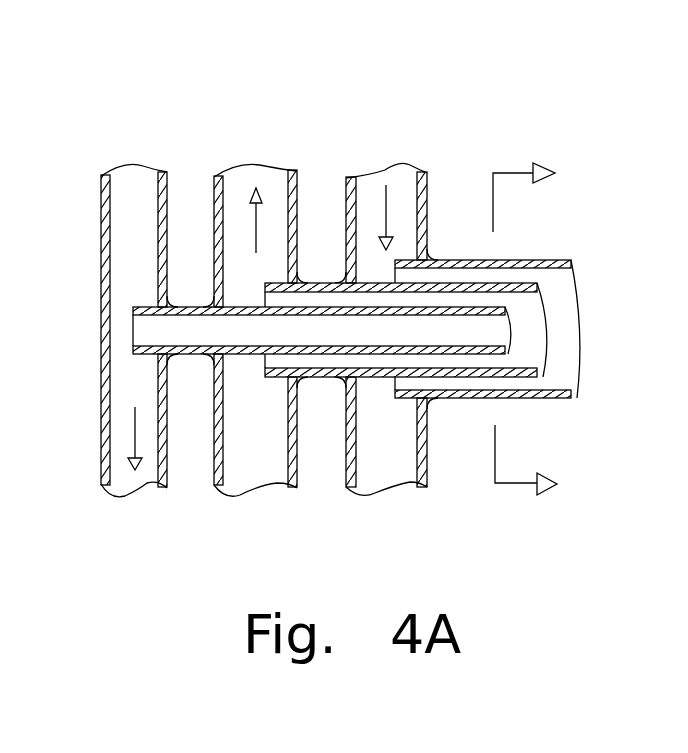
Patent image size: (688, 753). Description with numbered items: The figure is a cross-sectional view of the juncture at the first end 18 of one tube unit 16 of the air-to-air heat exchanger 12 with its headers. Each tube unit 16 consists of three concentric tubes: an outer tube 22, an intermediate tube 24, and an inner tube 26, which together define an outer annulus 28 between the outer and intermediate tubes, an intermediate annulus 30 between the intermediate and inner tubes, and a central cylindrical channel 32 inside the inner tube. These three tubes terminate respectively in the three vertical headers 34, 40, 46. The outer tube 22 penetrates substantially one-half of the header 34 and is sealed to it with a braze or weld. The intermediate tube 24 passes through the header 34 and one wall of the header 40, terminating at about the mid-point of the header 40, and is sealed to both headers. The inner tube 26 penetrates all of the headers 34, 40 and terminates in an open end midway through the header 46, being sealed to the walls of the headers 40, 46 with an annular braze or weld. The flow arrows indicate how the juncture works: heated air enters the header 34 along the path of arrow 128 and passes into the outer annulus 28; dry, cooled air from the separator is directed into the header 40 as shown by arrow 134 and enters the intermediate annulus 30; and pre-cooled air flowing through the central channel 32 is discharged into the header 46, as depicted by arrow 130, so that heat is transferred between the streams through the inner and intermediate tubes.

The air-to-air heat exchanger 12 is at (362, 92).
The tube unit 16 is at (559, 439).
The first end 18 is at (471, 398).
The outer tube 22 is at (563, 258).
The intermediate tube 24 is at (484, 279).
The inner tube 26 is at (180, 306).
The outer annulus 28 is at (533, 275).
The intermediate annulus 30 is at (503, 300).
The central cylindrical channel 32 is at (488, 332).
The header 34 is at (427, 200).
The header 40 is at (297, 186).
The header 46 is at (101, 240).
The arrow 128 is at (386, 188).
The arrow 130 is at (135, 450).
The arrow 134 is at (253, 220).